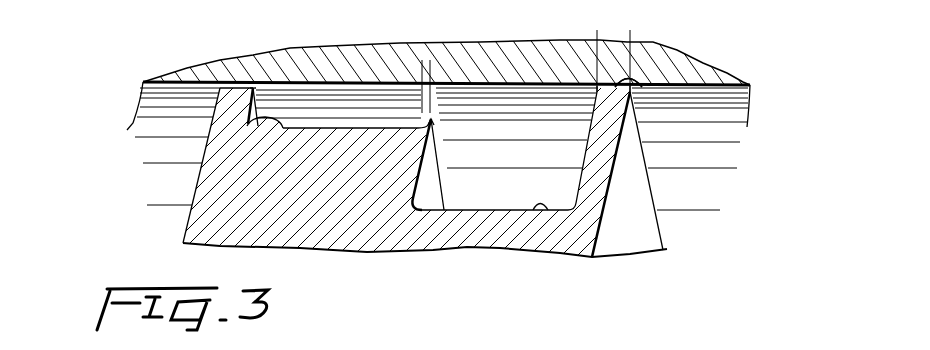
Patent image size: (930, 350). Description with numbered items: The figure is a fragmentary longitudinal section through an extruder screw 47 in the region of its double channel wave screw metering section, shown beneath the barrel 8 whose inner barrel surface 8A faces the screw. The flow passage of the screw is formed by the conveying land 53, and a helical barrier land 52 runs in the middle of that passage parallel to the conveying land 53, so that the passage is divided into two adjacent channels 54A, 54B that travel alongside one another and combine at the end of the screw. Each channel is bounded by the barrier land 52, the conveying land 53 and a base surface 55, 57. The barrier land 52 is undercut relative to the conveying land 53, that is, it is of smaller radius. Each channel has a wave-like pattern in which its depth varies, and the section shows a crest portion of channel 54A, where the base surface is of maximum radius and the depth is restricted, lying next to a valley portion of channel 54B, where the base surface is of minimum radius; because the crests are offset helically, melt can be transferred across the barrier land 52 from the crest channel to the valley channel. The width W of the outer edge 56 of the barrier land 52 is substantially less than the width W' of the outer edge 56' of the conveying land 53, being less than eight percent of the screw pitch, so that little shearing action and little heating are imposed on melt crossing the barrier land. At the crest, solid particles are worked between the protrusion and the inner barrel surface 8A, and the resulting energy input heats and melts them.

The barrel 8 is at (710, 77).
The inner barrel surface 8A is at (665, 45).
The extruder screw 47 is at (190, 206).
The helical barrier land 52 is at (431, 119).
The conveying land 53 is at (227, 110).
The channel 54A is at (333, 120).
The channel 54B is at (508, 180).
The base surface 55 is at (247, 125).
The outer edge of the barrier land 56 is at (399, 71).
The outer edge of the conveying land 56' is at (458, 114).
The base surface 57 is at (542, 207).
The width of the outer edge of the barrier land W is at (426, 80).
The width of the outer edge of the conveying land W' is at (626, 61).